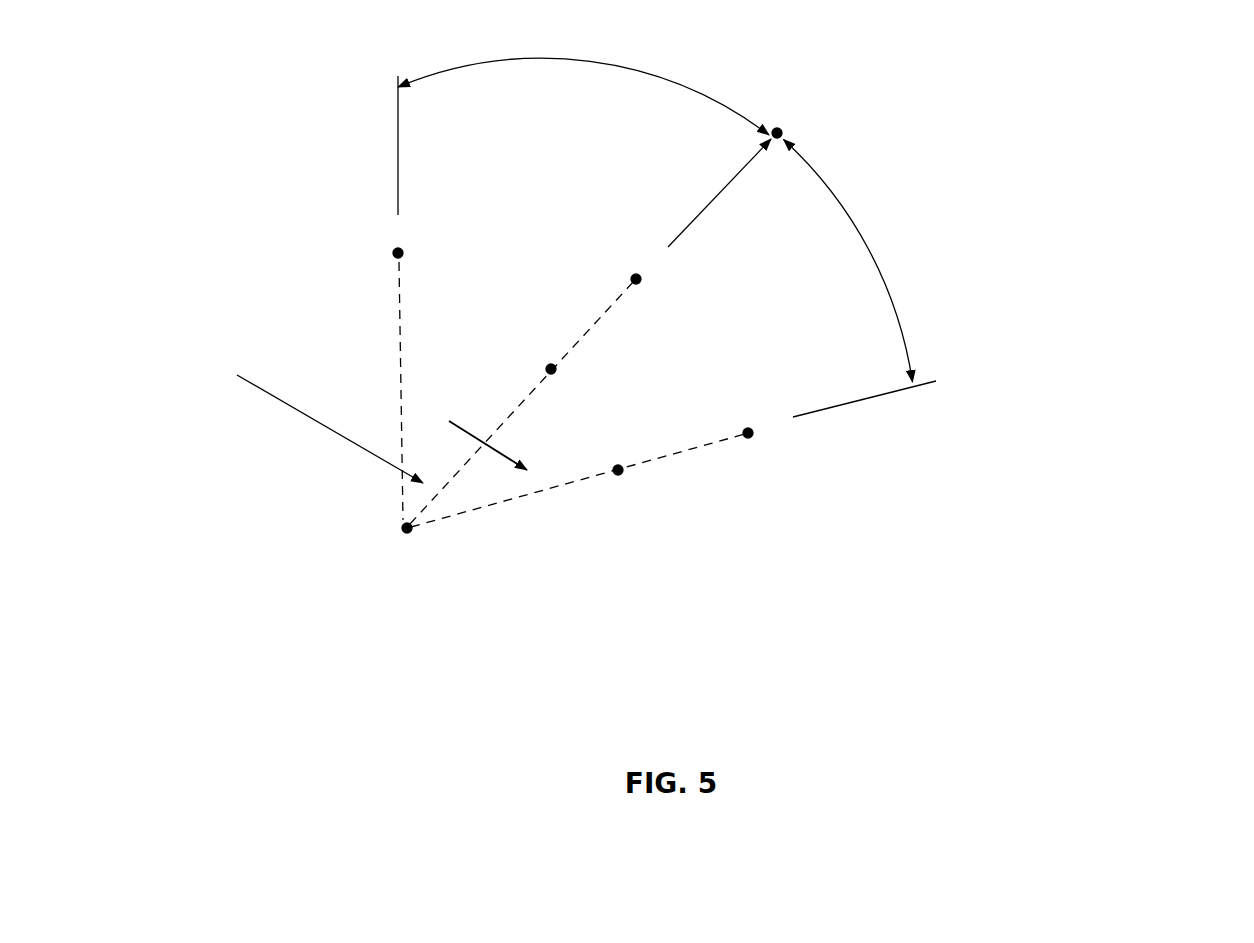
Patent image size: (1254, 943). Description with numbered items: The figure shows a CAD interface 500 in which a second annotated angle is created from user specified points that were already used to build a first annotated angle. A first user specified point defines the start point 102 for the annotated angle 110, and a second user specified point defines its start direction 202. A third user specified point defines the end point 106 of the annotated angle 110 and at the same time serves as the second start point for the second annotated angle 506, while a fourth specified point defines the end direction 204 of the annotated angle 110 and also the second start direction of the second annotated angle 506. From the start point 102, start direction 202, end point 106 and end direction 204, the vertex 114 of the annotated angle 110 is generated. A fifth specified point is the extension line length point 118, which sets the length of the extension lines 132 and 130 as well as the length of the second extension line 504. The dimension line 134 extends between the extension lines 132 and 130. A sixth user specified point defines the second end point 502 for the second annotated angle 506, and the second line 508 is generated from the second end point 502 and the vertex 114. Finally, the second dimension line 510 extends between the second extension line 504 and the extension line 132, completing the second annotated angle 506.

The CAD interface 500 is at (1216, 82).
The second end point 502 is at (395, 252).
The second extension line 504 is at (397, 114).
The second annotated angle 506 is at (312, 423).
The second line 508 is at (398, 348).
The second dimension line 510 is at (606, 62).
The vertex 114 is at (402, 532).
The end direction 204 is at (548, 368).
The end point 106 is at (636, 283).
The start direction 202 is at (616, 476).
The start point 102 is at (748, 428).
The annotated angle 110 is at (471, 436).
The extension line length point 118 is at (778, 140).
The extension line 132 is at (707, 200).
The dimension line 134 is at (868, 250).
The extension line 130 is at (876, 398).